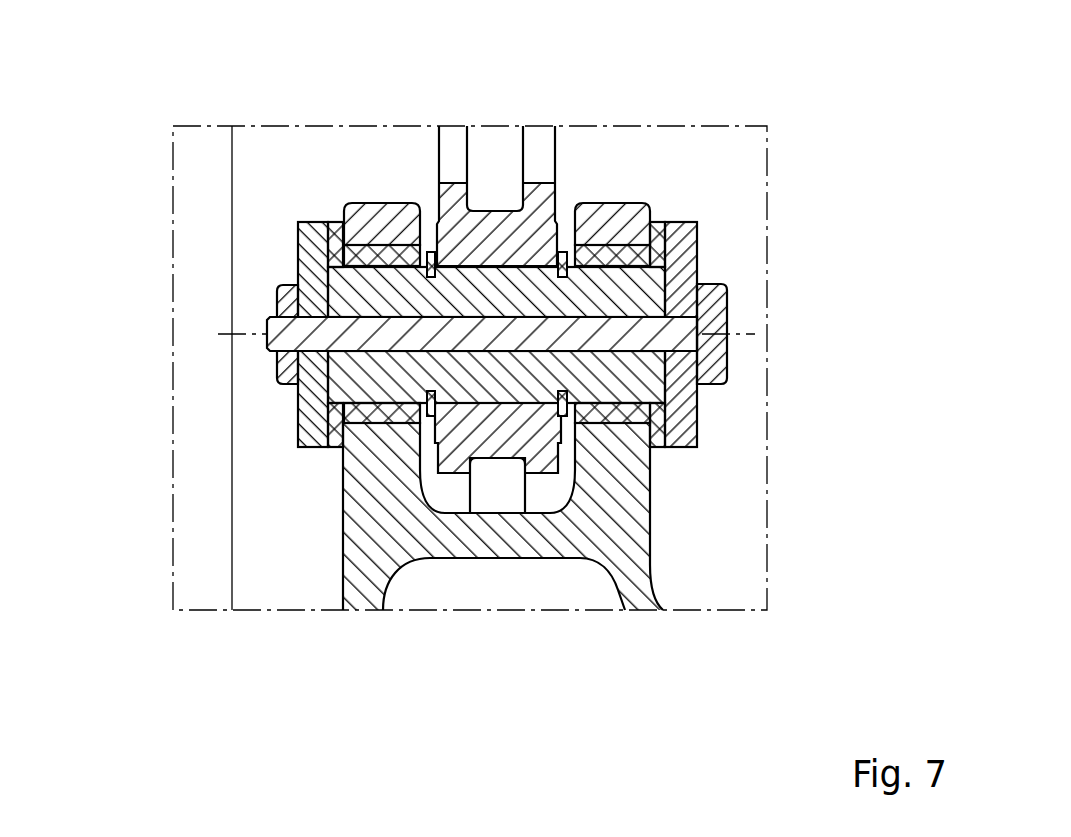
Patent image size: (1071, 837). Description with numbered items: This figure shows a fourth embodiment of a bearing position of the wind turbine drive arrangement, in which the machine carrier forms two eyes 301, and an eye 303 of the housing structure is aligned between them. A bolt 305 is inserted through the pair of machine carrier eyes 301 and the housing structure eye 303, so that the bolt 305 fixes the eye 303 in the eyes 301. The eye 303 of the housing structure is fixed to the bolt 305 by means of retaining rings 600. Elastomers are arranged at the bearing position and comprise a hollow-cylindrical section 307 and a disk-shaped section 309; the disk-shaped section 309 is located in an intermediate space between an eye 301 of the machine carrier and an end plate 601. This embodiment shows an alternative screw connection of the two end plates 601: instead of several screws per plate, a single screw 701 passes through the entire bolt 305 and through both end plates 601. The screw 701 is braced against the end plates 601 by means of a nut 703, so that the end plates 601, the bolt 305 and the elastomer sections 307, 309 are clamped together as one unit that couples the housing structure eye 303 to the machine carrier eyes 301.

The eye of the machine carrier 301 is at (408, 422).
The eye of the housing structure 303 is at (500, 233).
The bolt 305 is at (583, 370).
The hollow-cylindrical section 307 is at (365, 253).
The disk-shaped section 309 is at (340, 240).
The retaining ring 600 is at (433, 252).
The end plate 601 is at (320, 270).
The screw 701 is at (283, 343).
The nut 703 is at (283, 373).